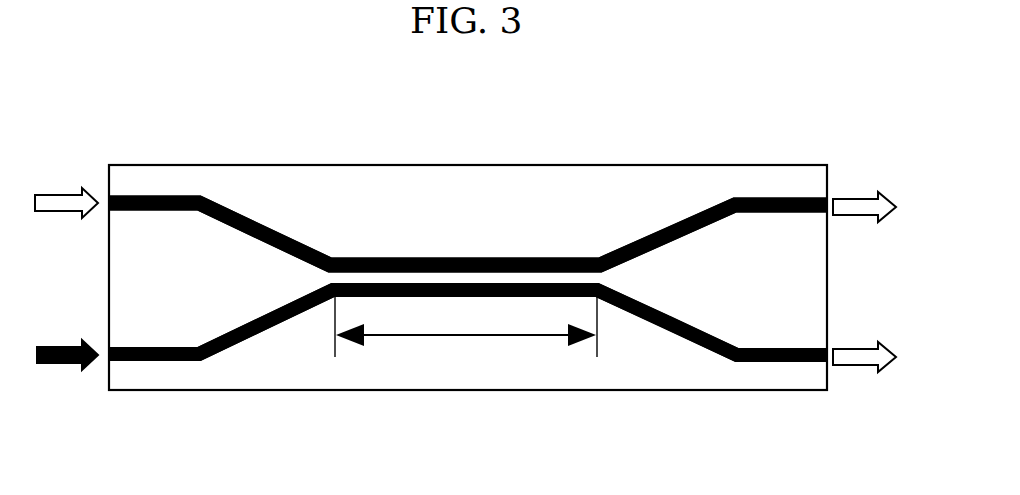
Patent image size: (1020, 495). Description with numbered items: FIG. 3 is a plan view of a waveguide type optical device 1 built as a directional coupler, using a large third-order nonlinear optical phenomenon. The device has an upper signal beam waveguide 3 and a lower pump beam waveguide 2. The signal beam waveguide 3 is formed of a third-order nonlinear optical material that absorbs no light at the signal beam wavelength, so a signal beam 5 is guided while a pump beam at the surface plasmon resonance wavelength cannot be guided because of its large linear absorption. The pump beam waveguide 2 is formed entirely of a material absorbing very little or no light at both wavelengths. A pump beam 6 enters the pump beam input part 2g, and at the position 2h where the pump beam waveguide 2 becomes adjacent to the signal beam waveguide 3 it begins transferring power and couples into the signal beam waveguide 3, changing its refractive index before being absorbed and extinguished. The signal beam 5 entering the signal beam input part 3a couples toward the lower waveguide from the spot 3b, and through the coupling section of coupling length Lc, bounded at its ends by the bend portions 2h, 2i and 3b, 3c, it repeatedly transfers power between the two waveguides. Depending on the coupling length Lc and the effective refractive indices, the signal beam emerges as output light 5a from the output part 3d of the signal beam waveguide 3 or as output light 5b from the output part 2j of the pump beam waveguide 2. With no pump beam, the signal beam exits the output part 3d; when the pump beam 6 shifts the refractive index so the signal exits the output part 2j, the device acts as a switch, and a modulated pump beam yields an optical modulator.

The optical waveguide device substrate 1 is at (310, 187).
The pump beam waveguide 2 is at (296, 305).
The pump beam input part 2g is at (187, 338).
The position where the pump beam waveguide becomes adjacent to the signal beam waveg 2h is at (365, 297).
The second bend portion of second waveguide 2i is at (566, 316).
The output part of the pump beam waveguide 2j is at (747, 338).
The signal beam waveguide 3 is at (298, 238).
The signal beam input part 3a is at (185, 220).
The spot adjacent to the lower pump beam waveguide 3b is at (363, 246).
The second bend portion of first waveguide 3c is at (566, 246).
The output part of the signal beam waveguide 3d is at (747, 225).
The signal beam 5 is at (66, 194).
The output light from first waveguide 5a is at (864, 194).
The output light from second waveguide 5b is at (864, 346).
The pump beam 6 is at (67, 345).
The coupling length Lc is at (466, 328).